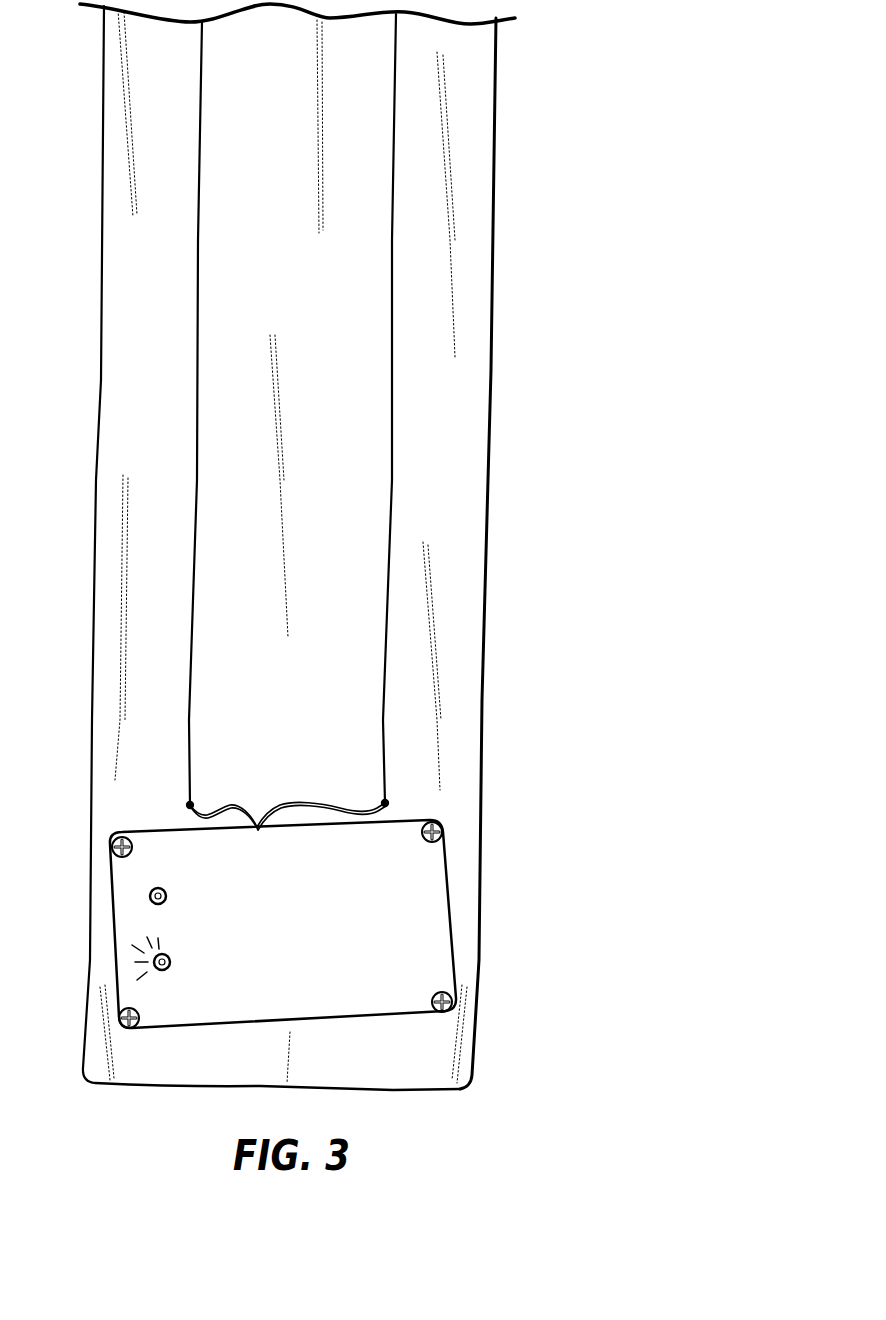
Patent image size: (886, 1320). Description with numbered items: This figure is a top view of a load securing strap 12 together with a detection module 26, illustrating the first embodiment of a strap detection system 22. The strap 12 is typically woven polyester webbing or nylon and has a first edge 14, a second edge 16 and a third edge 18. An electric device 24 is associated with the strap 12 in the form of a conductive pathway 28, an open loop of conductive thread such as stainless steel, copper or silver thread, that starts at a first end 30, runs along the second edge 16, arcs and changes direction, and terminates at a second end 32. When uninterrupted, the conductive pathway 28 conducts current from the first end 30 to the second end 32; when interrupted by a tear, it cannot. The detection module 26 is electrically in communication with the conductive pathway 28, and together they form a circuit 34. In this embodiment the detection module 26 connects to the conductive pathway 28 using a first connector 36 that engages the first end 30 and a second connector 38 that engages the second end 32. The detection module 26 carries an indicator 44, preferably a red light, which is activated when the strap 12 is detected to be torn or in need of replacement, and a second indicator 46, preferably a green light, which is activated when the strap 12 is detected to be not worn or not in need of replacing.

The strap 12 is at (455, 188).
The first edge 14 is at (195, 1088).
The second edge 16 is at (100, 442).
The third edge 18 is at (488, 545).
The strap detection system 22 is at (584, 287).
The electric device 24 is at (393, 400).
The detection module 26 is at (407, 923).
The conductive pathway 28 is at (190, 605).
The first end 30 is at (190, 805).
The second end 32 is at (393, 808).
The circuit 34 is at (384, 670).
The first connector 36 is at (217, 812).
The second connector 38 is at (332, 800).
The indicator 44 is at (163, 970).
The second indicator 46 is at (157, 903).